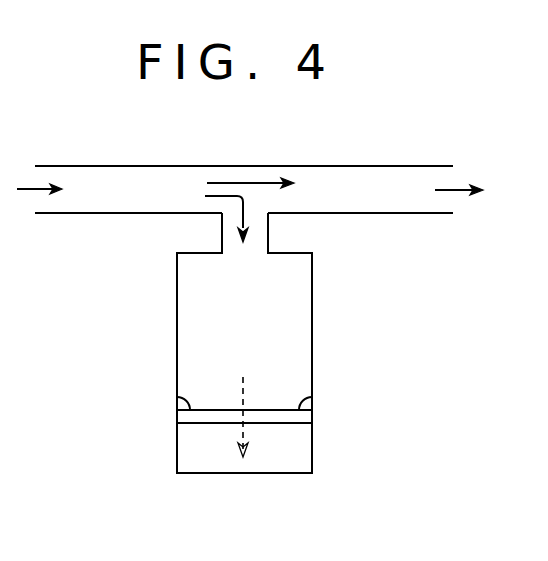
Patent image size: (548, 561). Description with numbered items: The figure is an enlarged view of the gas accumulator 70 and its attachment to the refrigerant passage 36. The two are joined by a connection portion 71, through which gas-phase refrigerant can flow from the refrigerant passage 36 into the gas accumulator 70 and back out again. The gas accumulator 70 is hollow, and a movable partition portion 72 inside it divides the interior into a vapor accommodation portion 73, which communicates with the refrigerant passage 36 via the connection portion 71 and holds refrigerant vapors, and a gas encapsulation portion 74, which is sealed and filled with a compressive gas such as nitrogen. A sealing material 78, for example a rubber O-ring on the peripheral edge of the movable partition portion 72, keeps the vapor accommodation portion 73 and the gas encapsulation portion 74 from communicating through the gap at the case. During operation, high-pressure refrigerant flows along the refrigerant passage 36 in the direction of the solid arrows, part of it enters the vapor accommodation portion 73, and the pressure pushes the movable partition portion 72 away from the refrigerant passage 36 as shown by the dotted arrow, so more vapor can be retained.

The refrigerant passage 36 is at (132, 178).
The gas accumulator 70 is at (313, 363).
The connection portion 71 is at (260, 233).
The vapor accommodation portion 73 is at (190, 302).
The sealing material 78 is at (177, 382).
The movable partition portion 72 is at (190, 417).
The gas encapsulation portion 74 is at (190, 447).